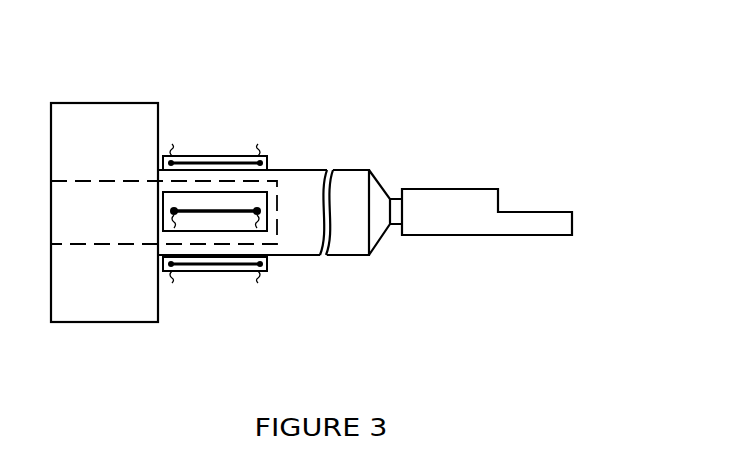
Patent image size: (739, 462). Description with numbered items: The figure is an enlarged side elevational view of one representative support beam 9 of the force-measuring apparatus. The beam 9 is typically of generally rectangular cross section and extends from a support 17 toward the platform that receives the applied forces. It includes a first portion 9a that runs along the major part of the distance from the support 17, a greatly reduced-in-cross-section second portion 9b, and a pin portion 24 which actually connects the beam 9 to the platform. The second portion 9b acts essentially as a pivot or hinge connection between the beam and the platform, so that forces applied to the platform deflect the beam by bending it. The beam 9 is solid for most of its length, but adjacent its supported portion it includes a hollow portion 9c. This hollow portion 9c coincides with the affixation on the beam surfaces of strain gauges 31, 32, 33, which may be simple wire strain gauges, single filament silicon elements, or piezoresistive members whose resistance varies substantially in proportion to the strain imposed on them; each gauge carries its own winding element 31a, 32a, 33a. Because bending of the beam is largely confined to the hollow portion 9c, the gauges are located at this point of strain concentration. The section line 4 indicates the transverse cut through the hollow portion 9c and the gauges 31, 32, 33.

The section line 4- 4 is at (270, 382).
The support beam 9 is at (227, 198).
The first portion 9a is at (292, 200).
The second portion 9b is at (390, 227).
The hollow portion 9c is at (275, 168).
The support 17 is at (112, 312).
The pin portion 24 is at (473, 227).
The strain gauge 31 is at (215, 132).
The upper coil winding 31a is at (240, 156).
The strain gauge 32 is at (189, 189).
The center coil winding 32a is at (168, 199).
The strain gauge 33 is at (215, 296).
The lower coil winding 33a is at (238, 273).